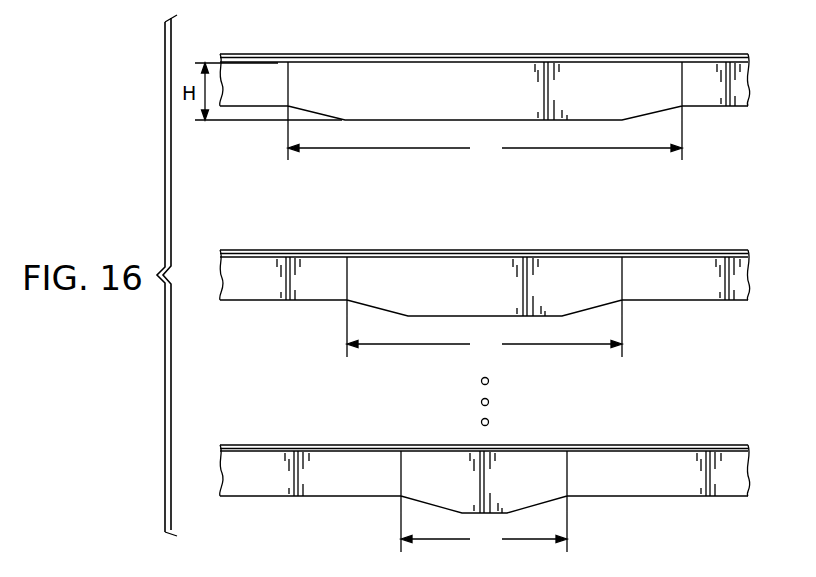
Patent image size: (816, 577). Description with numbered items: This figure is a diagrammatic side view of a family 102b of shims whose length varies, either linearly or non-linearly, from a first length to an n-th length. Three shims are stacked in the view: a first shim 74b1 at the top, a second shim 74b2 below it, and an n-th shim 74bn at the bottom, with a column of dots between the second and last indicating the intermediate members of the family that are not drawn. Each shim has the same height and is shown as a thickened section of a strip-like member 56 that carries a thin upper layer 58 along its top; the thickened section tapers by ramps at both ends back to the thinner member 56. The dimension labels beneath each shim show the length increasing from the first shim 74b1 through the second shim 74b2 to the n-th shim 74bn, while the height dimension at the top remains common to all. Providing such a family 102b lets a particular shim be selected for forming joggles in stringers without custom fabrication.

The family of shims 102b is at (149, 81).
The bearing strip / upper plate 58 is at (641, 55).
The cylindrical beam 56 is at (701, 97).
The first thickened section of beam 74b1 is at (367, 72).
The second thickened section of beam 74b2 is at (382, 266).
The n-th thickened section of beam 74bn is at (428, 461).